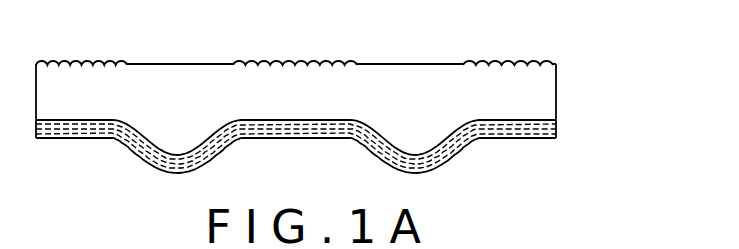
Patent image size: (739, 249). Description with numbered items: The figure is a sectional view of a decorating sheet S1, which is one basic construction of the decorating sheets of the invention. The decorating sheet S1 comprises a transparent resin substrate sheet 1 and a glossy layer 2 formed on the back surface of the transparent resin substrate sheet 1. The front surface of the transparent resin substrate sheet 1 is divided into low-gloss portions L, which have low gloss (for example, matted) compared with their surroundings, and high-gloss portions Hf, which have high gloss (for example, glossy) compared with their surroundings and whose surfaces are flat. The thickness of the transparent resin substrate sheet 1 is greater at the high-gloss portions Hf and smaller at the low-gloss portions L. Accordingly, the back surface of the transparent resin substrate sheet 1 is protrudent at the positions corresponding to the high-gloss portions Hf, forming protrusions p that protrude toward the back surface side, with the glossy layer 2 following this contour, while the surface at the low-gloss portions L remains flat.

The decorating sheet S1 is at (580, 54).
The transparent resin substrate sheet 1 is at (547, 95).
The glossy layer 2 is at (556, 130).
The high-gloss portion Hf is at (437, 63).
The low-gloss portion L is at (530, 63).
The protrusion p is at (425, 172).